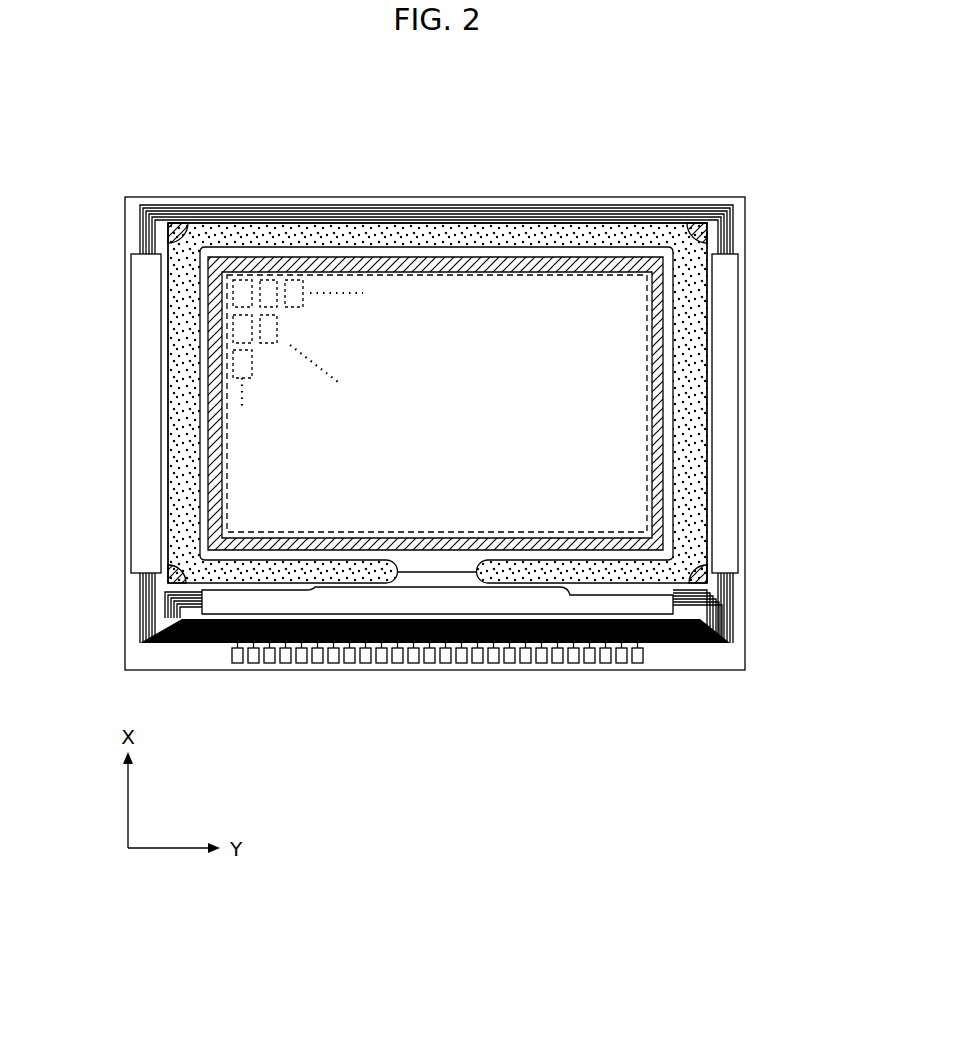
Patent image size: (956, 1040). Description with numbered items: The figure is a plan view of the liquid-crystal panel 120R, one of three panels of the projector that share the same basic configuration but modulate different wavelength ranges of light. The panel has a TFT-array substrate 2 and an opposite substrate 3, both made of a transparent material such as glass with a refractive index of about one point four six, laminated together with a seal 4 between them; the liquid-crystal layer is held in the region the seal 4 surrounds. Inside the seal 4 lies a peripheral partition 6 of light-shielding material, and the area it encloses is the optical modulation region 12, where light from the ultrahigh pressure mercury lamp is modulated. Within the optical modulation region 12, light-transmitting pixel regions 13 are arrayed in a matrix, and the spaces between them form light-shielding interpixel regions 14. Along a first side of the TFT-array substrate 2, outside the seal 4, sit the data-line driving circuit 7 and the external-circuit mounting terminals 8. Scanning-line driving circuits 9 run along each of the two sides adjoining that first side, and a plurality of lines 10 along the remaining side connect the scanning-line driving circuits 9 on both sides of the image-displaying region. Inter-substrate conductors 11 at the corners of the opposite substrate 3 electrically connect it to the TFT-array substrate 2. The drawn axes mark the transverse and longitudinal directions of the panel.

The liquid-crystal panel 120R is at (570, 126).
The TFT-array substrate 2 is at (438, 197).
The opposite substrate 3 is at (712, 233).
The seal 4 is at (690, 355).
The peripheral partition 6 is at (510, 545).
The data-line driving circuit 7 is at (421, 614).
The external-circuit mounting terminals 8 is at (318, 665).
The scanning-line driving circuits 9 is at (142, 310).
The lines 10 is at (376, 205).
The inter-substrate conductors 11 is at (173, 222).
The optical modulation region 12 is at (205, 385).
The pixel regions 13 is at (238, 222).
The interpixel regions 14 is at (280, 262).